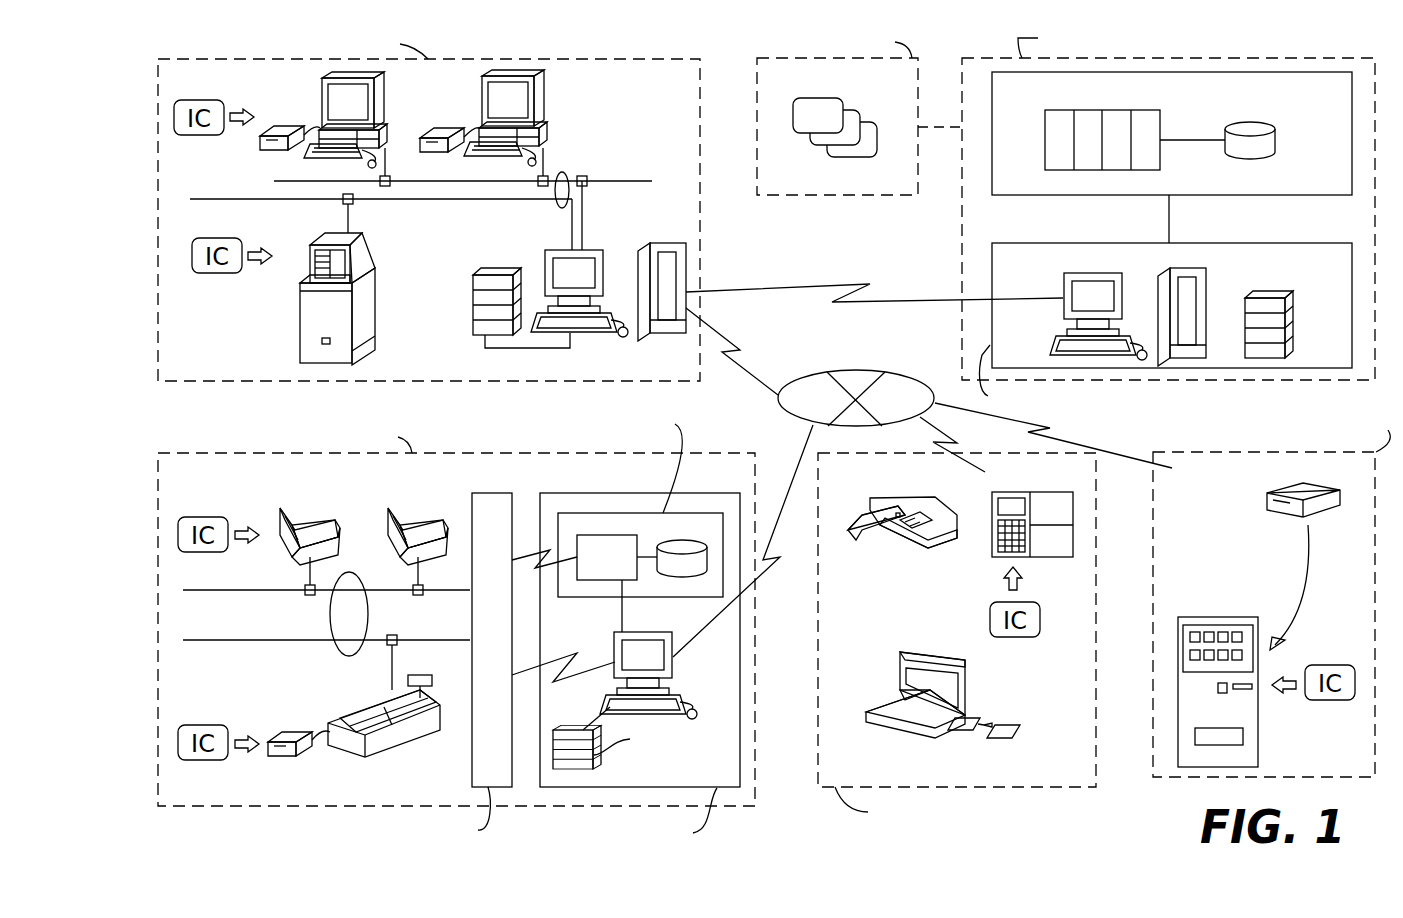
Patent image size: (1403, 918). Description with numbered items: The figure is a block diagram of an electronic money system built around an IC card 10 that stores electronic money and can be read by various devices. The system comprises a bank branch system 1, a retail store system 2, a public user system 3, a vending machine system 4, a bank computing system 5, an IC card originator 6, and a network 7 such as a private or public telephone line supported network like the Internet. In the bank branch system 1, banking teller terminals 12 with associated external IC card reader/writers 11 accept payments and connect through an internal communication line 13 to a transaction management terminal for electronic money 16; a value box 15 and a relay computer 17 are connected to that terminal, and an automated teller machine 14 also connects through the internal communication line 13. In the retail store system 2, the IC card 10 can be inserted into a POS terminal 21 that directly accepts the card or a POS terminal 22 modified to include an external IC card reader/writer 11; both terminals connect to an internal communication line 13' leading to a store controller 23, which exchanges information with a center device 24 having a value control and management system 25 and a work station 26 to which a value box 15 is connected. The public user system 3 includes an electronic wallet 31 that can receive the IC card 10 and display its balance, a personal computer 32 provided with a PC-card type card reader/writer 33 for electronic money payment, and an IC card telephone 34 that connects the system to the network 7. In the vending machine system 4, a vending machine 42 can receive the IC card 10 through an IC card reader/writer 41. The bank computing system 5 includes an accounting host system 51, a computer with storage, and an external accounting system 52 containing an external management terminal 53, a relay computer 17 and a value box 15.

The bank branch system 1 is at (700, 214).
The retail store system 2 is at (757, 663).
The public user system 3 is at (1097, 614).
The vending machine system 4 is at (1153, 557).
The bank computing system 5 is at (960, 236).
The IC card originator 6 is at (800, 196).
The network 7 is at (874, 372).
The IC card 10 is at (200, 134).
The IC card reader/writer 11 is at (276, 128).
The banking teller terminal 12 is at (385, 100).
The internal communication line 13 is at (421, 190).
The internal communication line 13' is at (326, 623).
The automated teller machine 14 is at (362, 290).
The value box 15 is at (473, 312).
The transaction management terminal for electronic money 16 is at (606, 262).
The relay computer 17 is at (662, 243).
The POS terminal 21 is at (320, 524).
The POS terminal 22 is at (412, 742).
The store controller 23 is at (512, 512).
The center device 24 is at (698, 493).
The value control and management system 25 is at (598, 597).
The work station 26 is at (675, 665).
The electronic wallet 31 is at (1050, 545).
The personal computer 32 is at (968, 678).
The PC-card type card reader/writer 33 is at (970, 730).
The IC card telephone 34 is at (910, 535).
The IC card reader/writer 41 is at (1295, 492).
The vending machine 42 is at (1215, 617).
The accounting host system 51 is at (1075, 195).
The external accounting system 52 is at (1262, 243).
The external management terminal 53 is at (1064, 293).